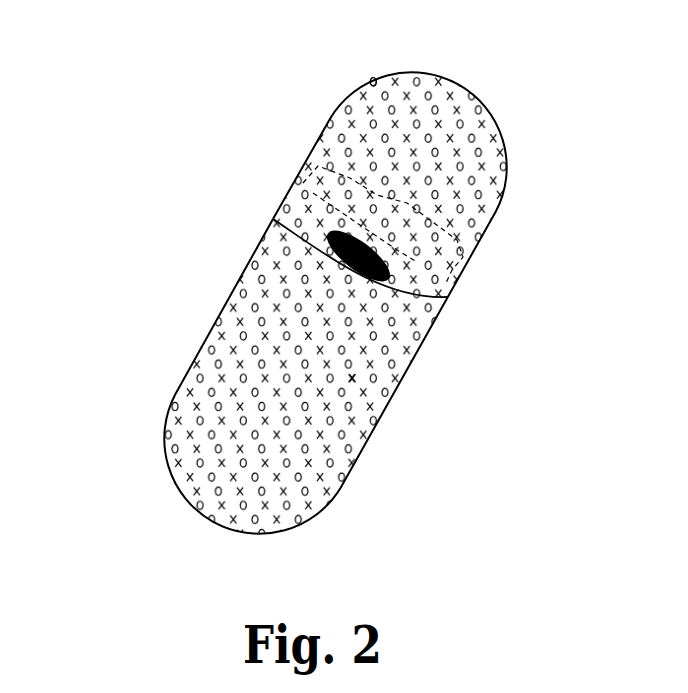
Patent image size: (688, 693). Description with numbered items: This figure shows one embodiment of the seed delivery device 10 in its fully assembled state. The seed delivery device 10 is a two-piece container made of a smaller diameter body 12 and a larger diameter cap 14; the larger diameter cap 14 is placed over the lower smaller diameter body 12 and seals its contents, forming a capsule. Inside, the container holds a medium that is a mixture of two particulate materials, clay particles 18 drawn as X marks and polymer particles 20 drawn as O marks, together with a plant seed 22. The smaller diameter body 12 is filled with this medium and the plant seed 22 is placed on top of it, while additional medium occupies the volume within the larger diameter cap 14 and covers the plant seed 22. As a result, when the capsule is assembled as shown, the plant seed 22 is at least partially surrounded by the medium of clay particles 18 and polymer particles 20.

The seed delivery device 10 is at (282, 282).
The smaller diameter body 12 is at (178, 492).
The larger diameter cap 14 is at (467, 85).
The clay particles 18 is at (233, 323).
The polymer particles 20 is at (387, 84).
The plant seed 22 is at (390, 273).